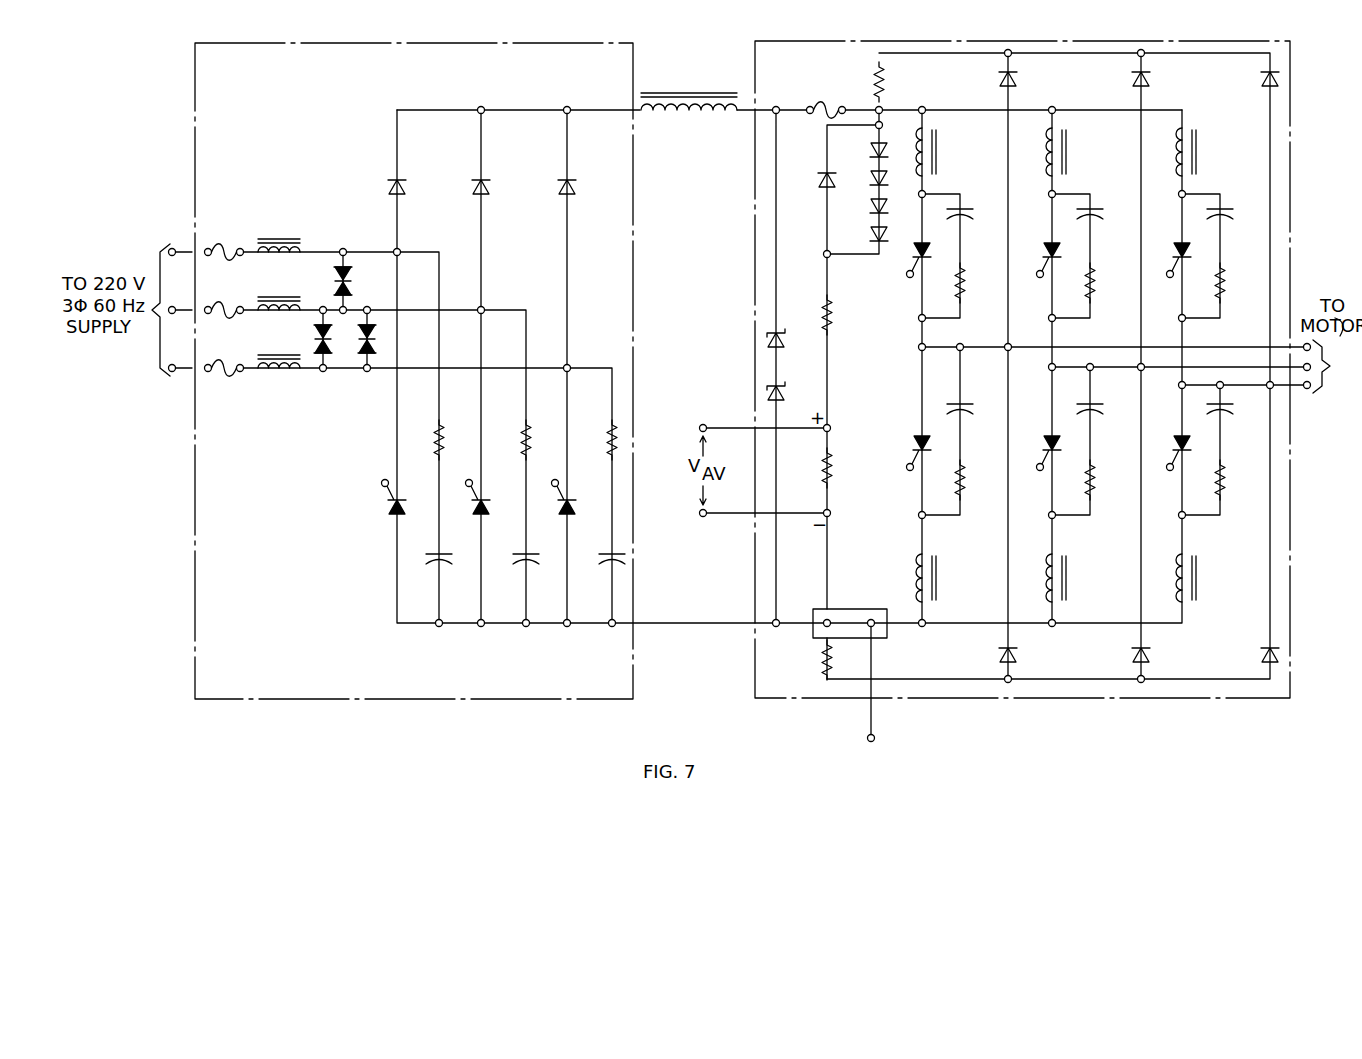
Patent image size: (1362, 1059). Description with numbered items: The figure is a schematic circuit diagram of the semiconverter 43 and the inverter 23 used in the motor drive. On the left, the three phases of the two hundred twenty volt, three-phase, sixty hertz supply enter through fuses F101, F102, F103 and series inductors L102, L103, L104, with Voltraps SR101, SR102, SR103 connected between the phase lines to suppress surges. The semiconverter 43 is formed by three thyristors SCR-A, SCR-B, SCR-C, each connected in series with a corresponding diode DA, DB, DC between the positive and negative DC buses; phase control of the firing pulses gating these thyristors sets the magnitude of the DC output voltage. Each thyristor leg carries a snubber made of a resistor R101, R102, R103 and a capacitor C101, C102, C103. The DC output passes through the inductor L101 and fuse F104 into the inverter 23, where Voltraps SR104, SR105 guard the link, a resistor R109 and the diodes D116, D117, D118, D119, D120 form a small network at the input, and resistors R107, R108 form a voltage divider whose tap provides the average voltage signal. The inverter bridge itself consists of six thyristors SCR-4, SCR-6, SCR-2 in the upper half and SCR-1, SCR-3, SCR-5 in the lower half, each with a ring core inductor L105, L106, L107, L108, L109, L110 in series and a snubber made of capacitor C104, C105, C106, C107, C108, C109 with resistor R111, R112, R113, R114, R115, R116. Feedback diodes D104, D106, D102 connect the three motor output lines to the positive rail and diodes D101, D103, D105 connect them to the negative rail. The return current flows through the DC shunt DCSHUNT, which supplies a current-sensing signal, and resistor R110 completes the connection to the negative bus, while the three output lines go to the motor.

The controllable DC voltage source 43 is at (573, 43).
The inverter 23 is at (802, 41).
The fuse F101 is at (238, 249).
The fuse F102 is at (238, 307).
The fuse F103 is at (238, 365).
The fuse F104 is at (834, 105).
The inductor L101 is at (672, 96).
The inductor L102 is at (283, 239).
The inductor L103 is at (279, 297).
The inductor L104 is at (279, 355).
The ring core inductor L105 is at (930, 134).
The ring core inductor L106 is at (1060, 134).
The ring core inductor L107 is at (1190, 134).
The ring core inductor L108 is at (930, 560).
The ring core inductor L109 is at (1058, 560).
The ring core inductor L110 is at (1188, 560).
The Voltrap SR101 is at (336, 283).
The Voltrap SR102 is at (318, 375).
The Voltrap SR103 is at (362, 380).
The Voltrap SR104 is at (764, 338).
The Voltrap SR105 is at (766, 394).
The diode DA is at (407, 190).
The diode DB is at (491, 190).
The diode DC is at (577, 190).
The resistor R101 is at (434, 440).
The resistor R102 is at (520, 440).
The resistor R103 is at (606, 440).
The resistor R107 is at (834, 316).
The resistor R108 is at (834, 470).
The resistor R109 is at (873, 82).
The resistor R110 is at (822, 661).
The non-inductive resistor R111 is at (966, 288).
The non-inductive resistor R112 is at (1096, 288).
The non-inductive resistor R113 is at (1226, 288).
The non-inductive resistor R114 is at (968, 483).
The non-inductive resistor R115 is at (1098, 483).
The non-inductive resistor R116 is at (1228, 483).
The thyristor SCR-A is at (390, 514).
The thyristor SCR-B is at (492, 508).
The thyristor SCR-C is at (578, 508).
The thyristor SCR-1 is at (912, 443).
The thyristor SCR-2 is at (1192, 250).
The thyristor SCR-3 is at (1062, 443).
The thyristor SCR-4 is at (910, 257).
The thyristor SCR-5 is at (1192, 443).
The thyristor SCR-6 is at (1062, 250).
The capacitor C101 is at (426, 560).
The capacitor C102 is at (512, 560).
The capacitor C103 is at (598, 560).
The capacitor C104 is at (984, 203).
The capacitor C105 is at (1114, 203).
The capacitor C106 is at (1244, 203).
The capacitor C107 is at (985, 402).
The capacitor C108 is at (1115, 402).
The capacitor C109 is at (1245, 402).
The diode D101 is at (998, 656).
The diode D102 is at (1262, 78).
The diode D103 is at (1132, 655).
The diode D104 is at (1000, 78).
The diode D105 is at (1262, 655).
The diode D106 is at (1133, 78).
The diode D116 is at (819, 182).
The diode D117 is at (871, 153).
The diode D118 is at (871, 181).
The diode D119 is at (871, 209).
The diode D120 is at (871, 237).
The DC shunt DCSHUNT is at (886, 636).